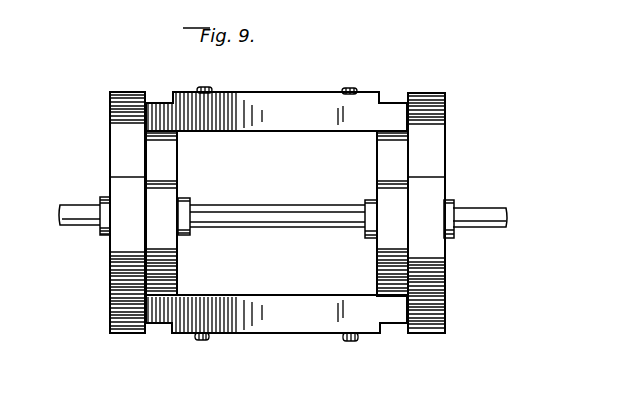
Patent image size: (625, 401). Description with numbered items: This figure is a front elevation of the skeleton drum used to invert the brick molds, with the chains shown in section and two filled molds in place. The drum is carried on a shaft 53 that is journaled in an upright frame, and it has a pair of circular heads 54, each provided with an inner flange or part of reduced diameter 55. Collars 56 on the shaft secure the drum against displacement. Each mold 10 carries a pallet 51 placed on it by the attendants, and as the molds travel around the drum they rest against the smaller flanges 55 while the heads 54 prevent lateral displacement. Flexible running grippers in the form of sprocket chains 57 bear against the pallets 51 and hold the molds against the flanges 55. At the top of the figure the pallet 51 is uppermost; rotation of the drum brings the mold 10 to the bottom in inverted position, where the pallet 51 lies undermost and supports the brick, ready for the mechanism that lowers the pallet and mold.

The mold 10 is at (287, 118).
The pallet 51 is at (287, 96).
The shaft 53 is at (73, 224).
The circular head 54 is at (127, 150).
The inner flange 55 is at (168, 165).
The collar 56 is at (102, 198).
The sprocket chain 57 is at (206, 93).